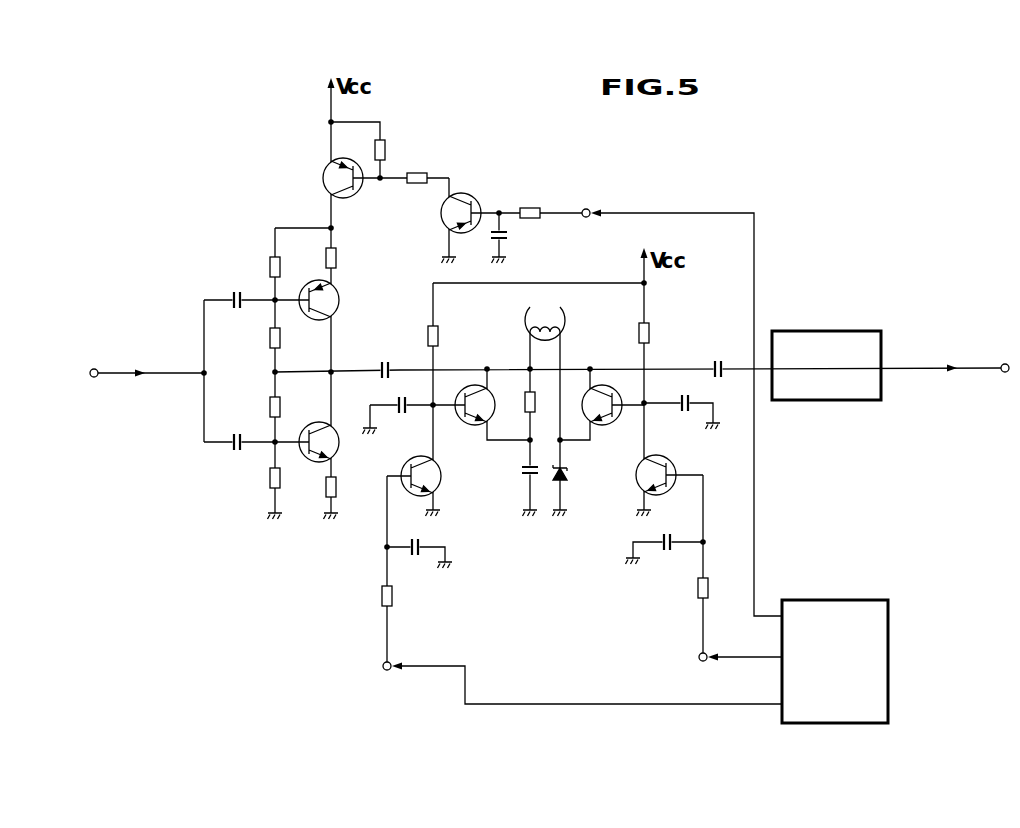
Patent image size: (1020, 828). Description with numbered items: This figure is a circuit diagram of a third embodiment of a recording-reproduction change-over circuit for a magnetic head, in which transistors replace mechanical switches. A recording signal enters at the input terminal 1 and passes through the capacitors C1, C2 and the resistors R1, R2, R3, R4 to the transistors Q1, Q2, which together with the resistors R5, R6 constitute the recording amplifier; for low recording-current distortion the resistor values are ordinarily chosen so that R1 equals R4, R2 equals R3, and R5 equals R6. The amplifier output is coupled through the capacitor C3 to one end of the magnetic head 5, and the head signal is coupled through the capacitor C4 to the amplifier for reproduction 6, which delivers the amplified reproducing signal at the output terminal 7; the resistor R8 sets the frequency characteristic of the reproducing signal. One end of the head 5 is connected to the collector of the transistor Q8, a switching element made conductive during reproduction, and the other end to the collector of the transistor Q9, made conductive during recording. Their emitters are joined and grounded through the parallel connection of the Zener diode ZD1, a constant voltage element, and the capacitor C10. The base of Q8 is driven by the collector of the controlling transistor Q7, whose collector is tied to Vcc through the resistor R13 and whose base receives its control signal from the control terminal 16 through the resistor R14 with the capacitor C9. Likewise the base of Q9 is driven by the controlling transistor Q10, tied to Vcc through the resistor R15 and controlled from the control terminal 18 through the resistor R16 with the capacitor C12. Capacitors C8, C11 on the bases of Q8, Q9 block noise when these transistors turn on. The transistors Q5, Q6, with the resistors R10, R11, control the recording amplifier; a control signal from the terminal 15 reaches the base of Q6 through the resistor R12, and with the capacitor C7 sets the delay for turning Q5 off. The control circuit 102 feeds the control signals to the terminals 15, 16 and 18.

The input terminal 1 is at (95, 378).
The magnetic head 5 is at (560, 320).
The amplifier for reproduction 6 is at (832, 331).
The output terminal 7 is at (1005, 364).
The terminal 15 is at (587, 208).
The control terminal 16 is at (381, 667).
The control terminal 18 is at (699, 656).
The control circuit 102 is at (822, 600).
The transistor Q1 is at (340, 300).
The transistor Q2 is at (321, 421).
The transistor Q5 is at (320, 178).
The transistor Q6 is at (471, 191).
The controlling transistor Q7 is at (442, 485).
The transistor Q8 is at (470, 427).
The transistor Q9 is at (581, 405).
The controlling transistor Q10 is at (636, 475).
The resistor R1 is at (269, 266).
The resistor R2 is at (268, 345).
The resistor R3 is at (270, 405).
The resistor R4 is at (268, 486).
The resistor R5 is at (336, 257).
The resistor R6 is at (337, 490).
The resistor R8 is at (524, 404).
The resistor R10 is at (385, 148).
The resistor R11 is at (418, 185).
The resistor R12 is at (530, 205).
The resistor R13 is at (440, 337).
The resistor R14 is at (382, 596).
The resistor R15 is at (641, 335).
The resistor R16 is at (710, 582).
The capacitor C1 is at (236, 293).
The capacitor C2 is at (238, 434).
The capacitor C3 is at (388, 359).
The capacitor C4 is at (717, 359).
The capacitor C7 is at (508, 236).
The capacitor C8 is at (403, 415).
The capacitor C9 is at (417, 556).
The capacitor C10 is at (523, 472).
The capacitor C11 is at (686, 415).
The capacitor C12 is at (665, 548).
The Zener diode ZD1 is at (568, 468).